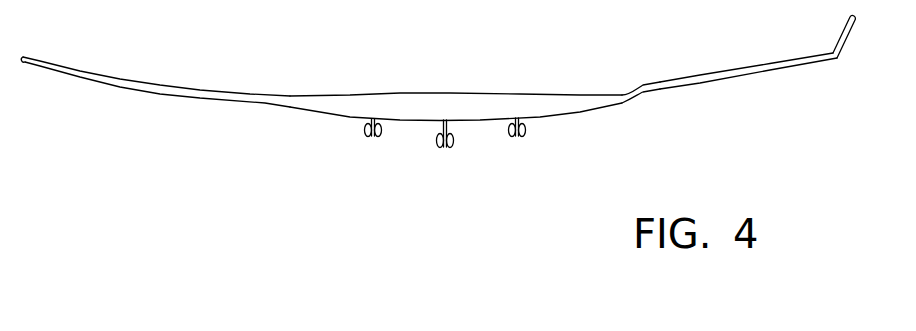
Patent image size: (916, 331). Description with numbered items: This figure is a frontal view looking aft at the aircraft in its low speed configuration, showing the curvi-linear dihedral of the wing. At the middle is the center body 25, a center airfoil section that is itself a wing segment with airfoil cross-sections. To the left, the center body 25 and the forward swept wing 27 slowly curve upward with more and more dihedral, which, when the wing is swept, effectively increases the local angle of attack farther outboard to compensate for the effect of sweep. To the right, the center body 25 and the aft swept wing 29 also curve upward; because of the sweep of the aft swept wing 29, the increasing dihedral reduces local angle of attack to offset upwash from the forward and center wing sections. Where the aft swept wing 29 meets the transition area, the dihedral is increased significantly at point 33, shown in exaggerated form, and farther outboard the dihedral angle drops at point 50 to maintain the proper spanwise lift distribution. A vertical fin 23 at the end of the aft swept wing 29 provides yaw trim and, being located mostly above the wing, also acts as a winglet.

The vertical fin 23 is at (851, 37).
The center body 25 is at (402, 95).
The forward swept wing 27 is at (107, 78).
The aft swept wing 29 is at (680, 77).
The point of increased dihedral at wing root 33 is at (622, 93).
The point of reduced dihedral 50 is at (645, 95).